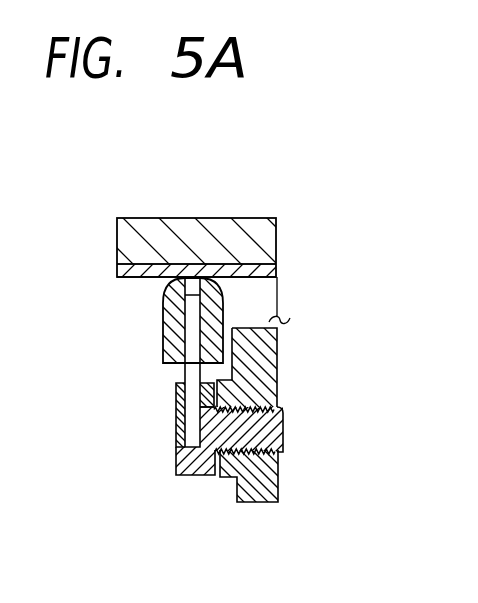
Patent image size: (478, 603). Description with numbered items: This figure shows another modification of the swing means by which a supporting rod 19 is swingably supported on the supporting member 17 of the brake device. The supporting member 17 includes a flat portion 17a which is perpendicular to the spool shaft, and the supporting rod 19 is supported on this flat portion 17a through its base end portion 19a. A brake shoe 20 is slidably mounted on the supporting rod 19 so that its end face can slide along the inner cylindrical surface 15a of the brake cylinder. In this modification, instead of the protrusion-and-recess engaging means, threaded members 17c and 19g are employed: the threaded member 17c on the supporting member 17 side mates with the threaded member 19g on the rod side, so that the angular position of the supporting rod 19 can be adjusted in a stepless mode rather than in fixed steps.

The inner cylindrical surface 15a is at (122, 278).
The brake shoe 20 is at (227, 270).
The supporting rod 19 is at (190, 312).
The base end portion 19a is at (179, 456).
The threaded member 19g is at (275, 402).
The flat portion 17a is at (265, 342).
The threaded member 17c is at (281, 444).
The supporting member 17 is at (280, 488).